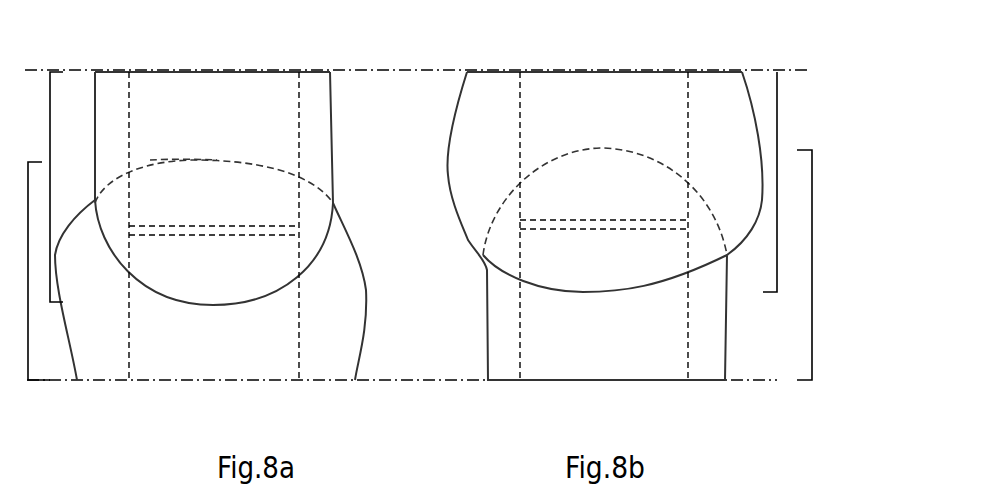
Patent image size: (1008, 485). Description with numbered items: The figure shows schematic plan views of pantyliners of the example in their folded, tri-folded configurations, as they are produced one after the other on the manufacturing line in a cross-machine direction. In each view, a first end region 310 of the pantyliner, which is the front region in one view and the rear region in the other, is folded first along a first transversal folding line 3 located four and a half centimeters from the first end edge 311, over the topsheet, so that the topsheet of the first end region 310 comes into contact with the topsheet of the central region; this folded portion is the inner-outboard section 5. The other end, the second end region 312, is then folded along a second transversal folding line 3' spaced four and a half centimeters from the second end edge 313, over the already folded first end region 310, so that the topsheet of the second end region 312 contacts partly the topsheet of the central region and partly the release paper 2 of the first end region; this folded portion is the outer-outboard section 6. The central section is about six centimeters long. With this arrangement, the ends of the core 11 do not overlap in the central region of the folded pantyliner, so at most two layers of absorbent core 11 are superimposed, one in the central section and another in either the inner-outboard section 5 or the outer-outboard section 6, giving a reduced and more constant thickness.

In FIG. 8a, the release paper 2 is at (372, 440).
In FIG. 8b, the release paper 2 is at (275, 22).
In FIG. 8a, the first transversal folding line 3 is at (208, 326).
In FIG. 8b, the first transversal folding line 3 is at (604, 226).
In FIG. 8b, the second transversal folding line 3' is at (478, 39).
In FIG. 8a, the inner-outboard section 5 is at (28, 270).
In FIG. 8b, the inner-outboard section 5 is at (812, 264).
In FIG. 8a, the outer-outboard section 6 is at (50, 187).
In FIG. 8b, the outer-outboard section 6 is at (777, 182).
In FIG. 8a, the core 11 is at (130, 318).
In FIG. 8b, the core 11 is at (688, 208).
In FIG. 8a, the first end region 310 is at (210, 190).
In FIG. 8b, the first end region 310 is at (580, 193).
In FIG. 8a, the first end edge 311 is at (217, 160).
In FIG. 8b, the first end edge 311 is at (597, 147).
In FIG. 8a, the second end region 312 is at (223, 272).
In FIG. 8b, the second end region 312 is at (610, 268).
In FIG. 8a, the second end edge 313 is at (217, 305).
In FIG. 8b, the second end edge 313 is at (610, 292).